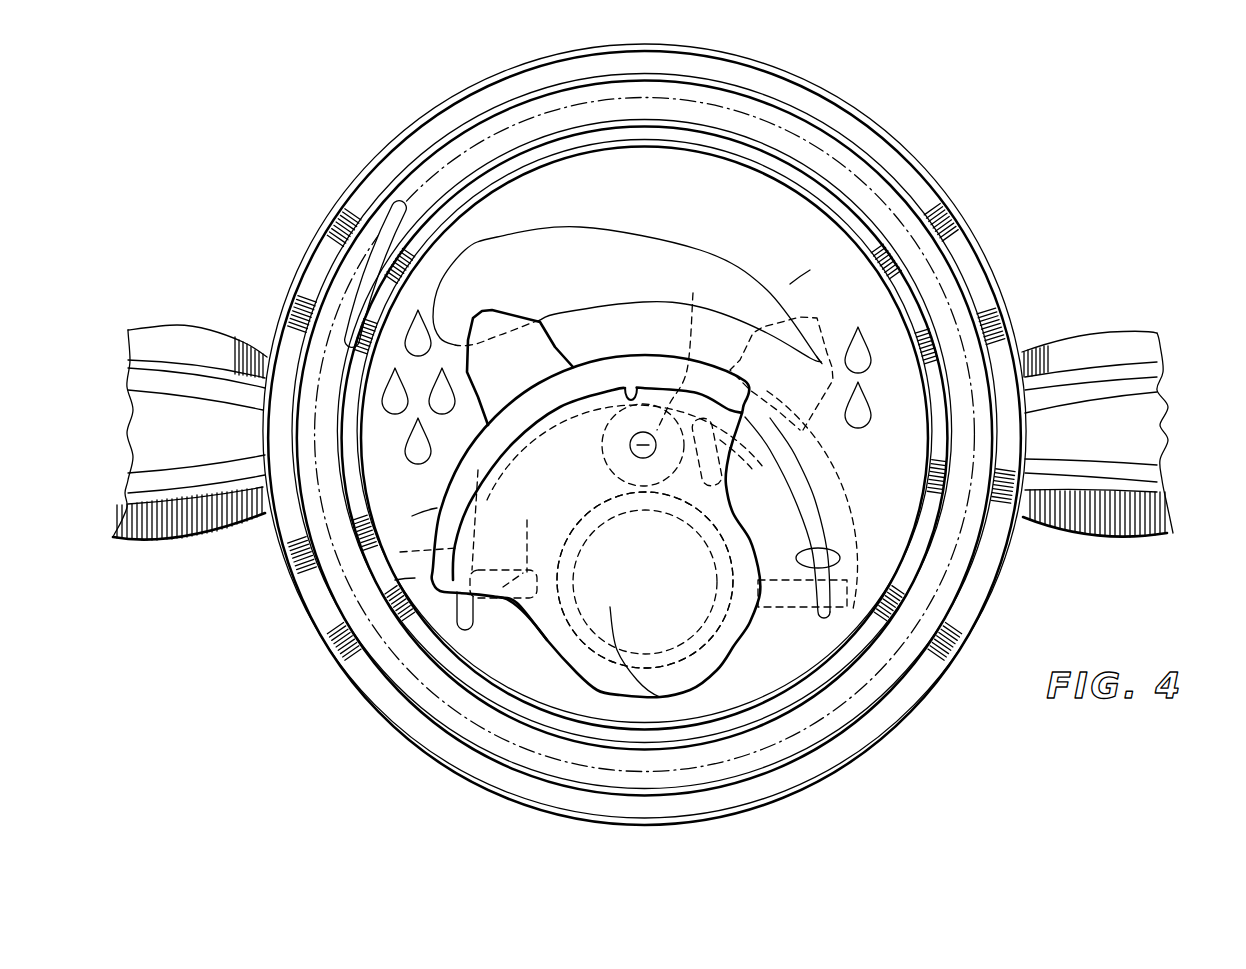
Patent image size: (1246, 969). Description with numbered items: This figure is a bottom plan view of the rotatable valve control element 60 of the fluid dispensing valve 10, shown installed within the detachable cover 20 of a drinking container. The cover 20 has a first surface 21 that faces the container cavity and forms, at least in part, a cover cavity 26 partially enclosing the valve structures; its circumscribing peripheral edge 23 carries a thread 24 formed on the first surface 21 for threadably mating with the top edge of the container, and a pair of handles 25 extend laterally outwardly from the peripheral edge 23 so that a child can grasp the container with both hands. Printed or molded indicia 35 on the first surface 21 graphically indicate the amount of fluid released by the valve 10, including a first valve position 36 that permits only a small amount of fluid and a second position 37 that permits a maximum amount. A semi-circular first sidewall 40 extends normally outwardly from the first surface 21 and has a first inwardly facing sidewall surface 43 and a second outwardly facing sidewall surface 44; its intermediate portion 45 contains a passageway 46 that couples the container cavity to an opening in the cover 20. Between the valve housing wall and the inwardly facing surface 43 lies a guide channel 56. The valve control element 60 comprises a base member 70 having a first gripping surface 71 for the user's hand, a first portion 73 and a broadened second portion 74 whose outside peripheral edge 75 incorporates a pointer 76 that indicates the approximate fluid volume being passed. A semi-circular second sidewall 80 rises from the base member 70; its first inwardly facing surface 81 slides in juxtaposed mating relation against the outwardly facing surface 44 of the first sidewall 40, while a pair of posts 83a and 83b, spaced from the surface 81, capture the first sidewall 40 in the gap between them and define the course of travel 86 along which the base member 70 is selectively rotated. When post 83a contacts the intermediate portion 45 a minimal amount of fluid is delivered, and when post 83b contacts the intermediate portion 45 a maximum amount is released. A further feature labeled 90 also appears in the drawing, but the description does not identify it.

The fluid dispensing valve 10 is at (1112, 100).
The detachable cover 20 is at (1060, 225).
The first surface 21 is at (788, 204).
The circumscribing peripheral edge 23 is at (936, 208).
The thread 24 is at (466, 132).
The handles 25 is at (188, 417).
The cover cavity 26 is at (724, 192).
The printed or molded indicia 35 is at (792, 281).
The first valve position 36 is at (829, 351).
The second position 37 is at (465, 327).
The semi-circular first sidewall 40 is at (833, 537).
The first inwardly facing sidewall surface 43 is at (847, 557).
The second outwardly facing sidewall surface 44 is at (827, 520).
The intermediate portion 45 is at (653, 430).
The passageway 46 is at (692, 300).
The guide channel 56 is at (777, 553).
The rotatable valve control element 60 is at (590, 689).
The base member 70 is at (737, 543).
The first gripping surface 71 is at (543, 613).
The first portion 73 is at (660, 697).
The broadened second portion 74 is at (395, 580).
The outside peripheral edge 75 is at (412, 516).
The pointer 76 is at (519, 368).
The semi-circular shaped second sidewall 80 is at (607, 380).
The first inwardly facing surface 81 is at (640, 385).
The first post 83a is at (607, 453).
The second post 83b is at (737, 486).
The course of travel 86 is at (600, 505).
The inner boss 90 is at (695, 645).